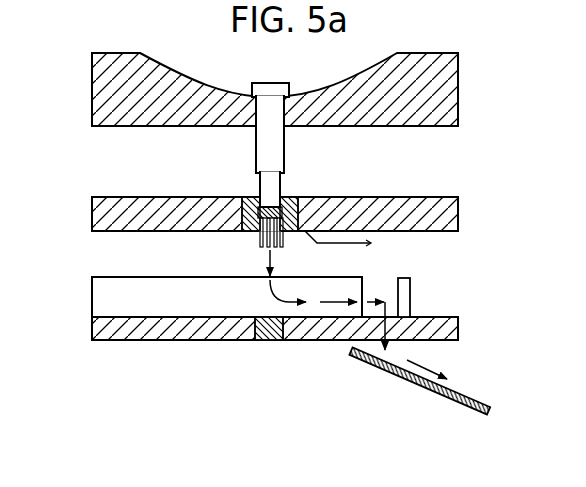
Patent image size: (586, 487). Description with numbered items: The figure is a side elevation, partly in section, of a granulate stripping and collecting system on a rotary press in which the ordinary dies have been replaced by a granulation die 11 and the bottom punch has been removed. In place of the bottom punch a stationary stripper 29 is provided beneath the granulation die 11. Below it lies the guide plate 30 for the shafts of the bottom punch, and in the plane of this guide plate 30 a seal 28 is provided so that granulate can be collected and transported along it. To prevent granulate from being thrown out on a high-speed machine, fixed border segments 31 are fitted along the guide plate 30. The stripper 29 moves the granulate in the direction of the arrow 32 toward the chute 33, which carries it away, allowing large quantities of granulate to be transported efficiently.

The granulation die 11 is at (296, 196).
The stripper 29 is at (376, 231).
The fixed border segment 31 is at (100, 296).
The guide plate 30 is at (145, 326).
The seal 28 is at (265, 341).
The arrow 32 is at (337, 303).
The chute 33 is at (418, 386).